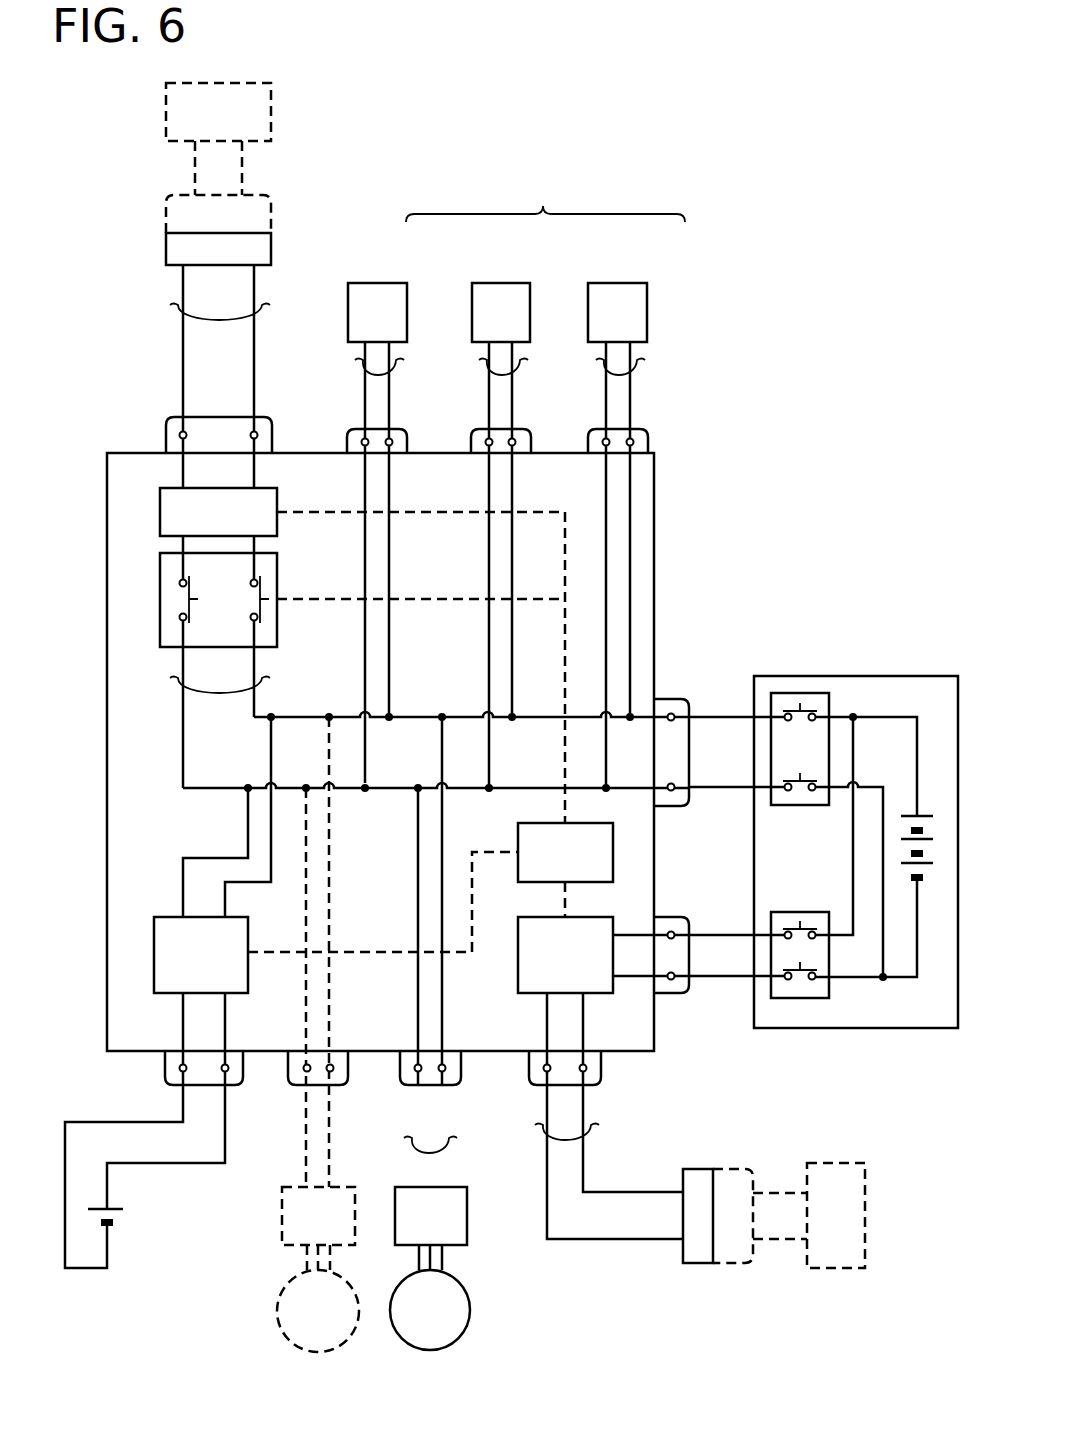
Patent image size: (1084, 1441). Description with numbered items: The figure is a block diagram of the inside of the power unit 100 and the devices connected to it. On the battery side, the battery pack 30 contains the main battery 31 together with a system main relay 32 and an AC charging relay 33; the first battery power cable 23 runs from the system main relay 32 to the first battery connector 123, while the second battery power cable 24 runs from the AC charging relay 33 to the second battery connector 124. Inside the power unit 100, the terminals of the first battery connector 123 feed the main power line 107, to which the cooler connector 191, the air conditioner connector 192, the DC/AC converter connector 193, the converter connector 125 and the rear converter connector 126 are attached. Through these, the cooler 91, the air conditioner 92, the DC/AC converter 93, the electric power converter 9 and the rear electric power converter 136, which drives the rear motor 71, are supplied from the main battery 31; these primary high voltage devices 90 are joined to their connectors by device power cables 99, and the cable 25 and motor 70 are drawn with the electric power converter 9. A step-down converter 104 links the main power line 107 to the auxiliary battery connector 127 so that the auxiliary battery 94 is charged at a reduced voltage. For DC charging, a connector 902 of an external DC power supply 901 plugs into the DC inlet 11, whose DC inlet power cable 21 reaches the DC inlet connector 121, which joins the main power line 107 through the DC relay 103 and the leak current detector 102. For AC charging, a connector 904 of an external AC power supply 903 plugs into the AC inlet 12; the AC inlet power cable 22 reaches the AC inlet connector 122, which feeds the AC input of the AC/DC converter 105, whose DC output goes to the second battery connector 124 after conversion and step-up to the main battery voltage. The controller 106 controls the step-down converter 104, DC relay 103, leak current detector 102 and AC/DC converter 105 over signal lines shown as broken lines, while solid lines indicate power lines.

The power unit 100 is at (733, 444).
The DC power supply 901 is at (166, 115).
The connector 902 is at (166, 215).
The DC inlet 11 is at (166, 253).
The DC inlet power cable 21 is at (175, 312).
The DC inlet connector 121 is at (166, 425).
The high voltage devices 90 is at (545, 199).
The cooler 91 is at (390, 283).
The air conditioner 92 is at (515, 283).
The DC/AC converter 93 is at (640, 283).
The device power cables 99 is at (640, 368).
The cooler connector 191 is at (402, 429).
The air conditioner connector 192 is at (526, 429).
The DC/AC converter connector 193 is at (643, 429).
The leak current detector 102 is at (160, 510).
The DC relay 103 is at (160, 598).
The main power line 107 is at (175, 685).
The step-down converter 104 is at (154, 940).
The controller 106 is at (613, 852).
The AC/DC converter 105 is at (613, 988).
The first battery connector 123 is at (675, 699).
The second battery connector 124 is at (675, 917).
The first battery power cable 23 is at (718, 797).
The second battery power cable 24 is at (725, 925).
The battery pack 30 is at (880, 1028).
The system main relay 32 is at (800, 693).
The AC charging relay 33 is at (800, 998).
The main battery 31 is at (920, 815).
The auxiliary battery connector 127 is at (243, 1077).
The rear converter connector 126 is at (348, 1077).
The converter connector 125 is at (461, 1077).
The AC inlet connector 122 is at (601, 1080).
The auxiliary battery 94 is at (122, 1212).
The rear electric power converter 136 is at (282, 1220).
The rear motor 71 is at (280, 1325).
The cable 25 is at (452, 1140).
The electric power converter 9 is at (467, 1240).
The motor 70 is at (470, 1312).
The AC inlet power cable 22 is at (593, 1125).
The AC inlet 12 is at (693, 1263).
The connector 904 is at (730, 1263).
The AC power supply 903 is at (830, 1268).